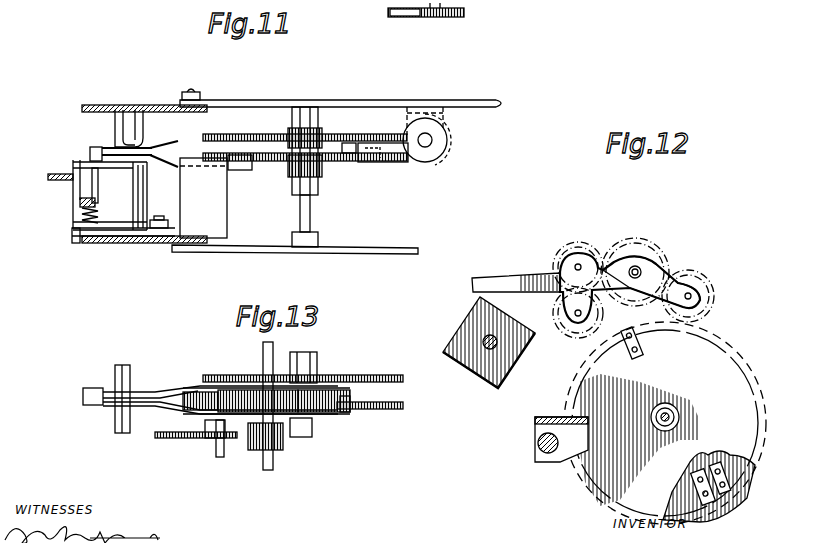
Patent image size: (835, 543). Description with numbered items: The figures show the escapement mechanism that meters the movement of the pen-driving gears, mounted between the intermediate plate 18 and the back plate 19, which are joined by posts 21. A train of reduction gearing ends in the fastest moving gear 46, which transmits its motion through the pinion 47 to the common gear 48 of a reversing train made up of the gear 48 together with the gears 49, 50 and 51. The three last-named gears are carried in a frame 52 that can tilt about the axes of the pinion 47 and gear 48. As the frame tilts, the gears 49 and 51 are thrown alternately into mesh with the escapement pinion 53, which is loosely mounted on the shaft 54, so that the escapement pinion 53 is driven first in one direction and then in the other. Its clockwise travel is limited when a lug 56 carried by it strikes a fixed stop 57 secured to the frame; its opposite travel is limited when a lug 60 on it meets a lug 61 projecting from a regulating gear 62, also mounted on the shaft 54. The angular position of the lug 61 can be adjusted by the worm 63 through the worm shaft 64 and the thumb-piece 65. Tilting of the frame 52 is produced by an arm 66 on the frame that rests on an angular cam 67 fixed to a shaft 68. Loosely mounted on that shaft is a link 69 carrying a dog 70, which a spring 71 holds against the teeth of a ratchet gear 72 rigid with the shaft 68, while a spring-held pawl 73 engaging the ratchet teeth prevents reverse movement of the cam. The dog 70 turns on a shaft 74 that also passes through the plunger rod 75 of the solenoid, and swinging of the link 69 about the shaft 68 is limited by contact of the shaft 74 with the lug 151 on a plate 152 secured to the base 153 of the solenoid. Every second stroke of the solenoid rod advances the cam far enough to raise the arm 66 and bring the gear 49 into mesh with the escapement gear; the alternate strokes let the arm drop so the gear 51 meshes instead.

In FIG. 11, the intermediate plate 18 is at (394, 100).
In FIG. 11, the back plate 19 is at (386, 248).
In FIG. 12, the posts 21 is at (538, 443).
In FIG. 13, the fastest moving gear 46 is at (186, 438).
In FIG. 13, the pinion 47 is at (284, 442).
In FIG. 12, the common gear 48 is at (655, 263).
In FIG. 13, the common gear 48 is at (252, 388).
In FIG. 12, the reversing gear 49 is at (702, 291).
In FIG. 13, the reversing gear 49 is at (346, 412).
In FIG. 12, the reversing gear 50 is at (583, 258).
In FIG. 13, the reversing gear 50 is at (200, 393).
In FIG. 12, the reversing gear 51 is at (577, 335).
In FIG. 12, the frame 52 is at (686, 280).
In FIG. 13, the frame 52 is at (313, 428).
In FIG. 11, the escapement pinion 53 is at (352, 162).
In FIG. 12, the escapement pinion 53 is at (625, 482).
In FIG. 13, the escapement pinion 53 is at (382, 409).
In FIG. 11, the shaft 54 is at (308, 207).
In FIG. 12, the shaft 54 is at (672, 415).
In FIG. 13, the shaft 54 is at (305, 358).
In FIG. 11, the lug 56 is at (245, 164).
In FIG. 12, the lug 56 is at (639, 343).
In FIG. 11, the fixed stop 57 is at (215, 193).
In FIG. 12, the fixed stop 57 is at (564, 458).
In FIG. 11, the lug 60 is at (392, 162).
In FIG. 12, the lug 60 is at (706, 503).
In FIG. 11, the lug 61 is at (348, 143).
In FIG. 12, the lug 61 is at (724, 484).
In FIG. 11, the regulating gear 62 is at (373, 141).
In FIG. 12, the regulating gear 62 is at (691, 508).
In FIG. 13, the regulating gear 62 is at (366, 380).
In FIG. 11, the worm 63 is at (447, 146).
In FIG. 11, the worm shaft 64 is at (432, 139).
In FIG. 11, the thumb-piece 65 is at (466, 12).
In FIG. 11, the arm 66 is at (166, 146).
In FIG. 12, the arm 66 is at (503, 282).
In FIG. 13, the arm 66 is at (115, 401).
In FIG. 11, the angular cam 67 is at (96, 147).
In FIG. 12, the angular cam 67 is at (516, 349).
In FIG. 13, the angular cam 67 is at (92, 389).
In FIG. 11, the shaft 68 is at (140, 110).
In FIG. 12, the shaft 68 is at (489, 334).
In FIG. 13, the shaft 68 is at (130, 373).
In FIG. 11, the link 69 is at (140, 190).
In FIG. 11, the dog 70 is at (77, 237).
In FIG. 11, the spring 71 is at (80, 214).
In FIG. 11, the ratchet gear 72 is at (108, 237).
In FIG. 11, the pawl 73 is at (172, 226).
In FIG. 11, the shaft 74 is at (98, 188).
In FIG. 11, the plunger rod 75 is at (80, 201).
In FIG. 11, the lug 151 is at (73, 168).
In FIG. 11, the plate 152 is at (52, 174).
In FIG. 11, the base 153 is at (108, 105).